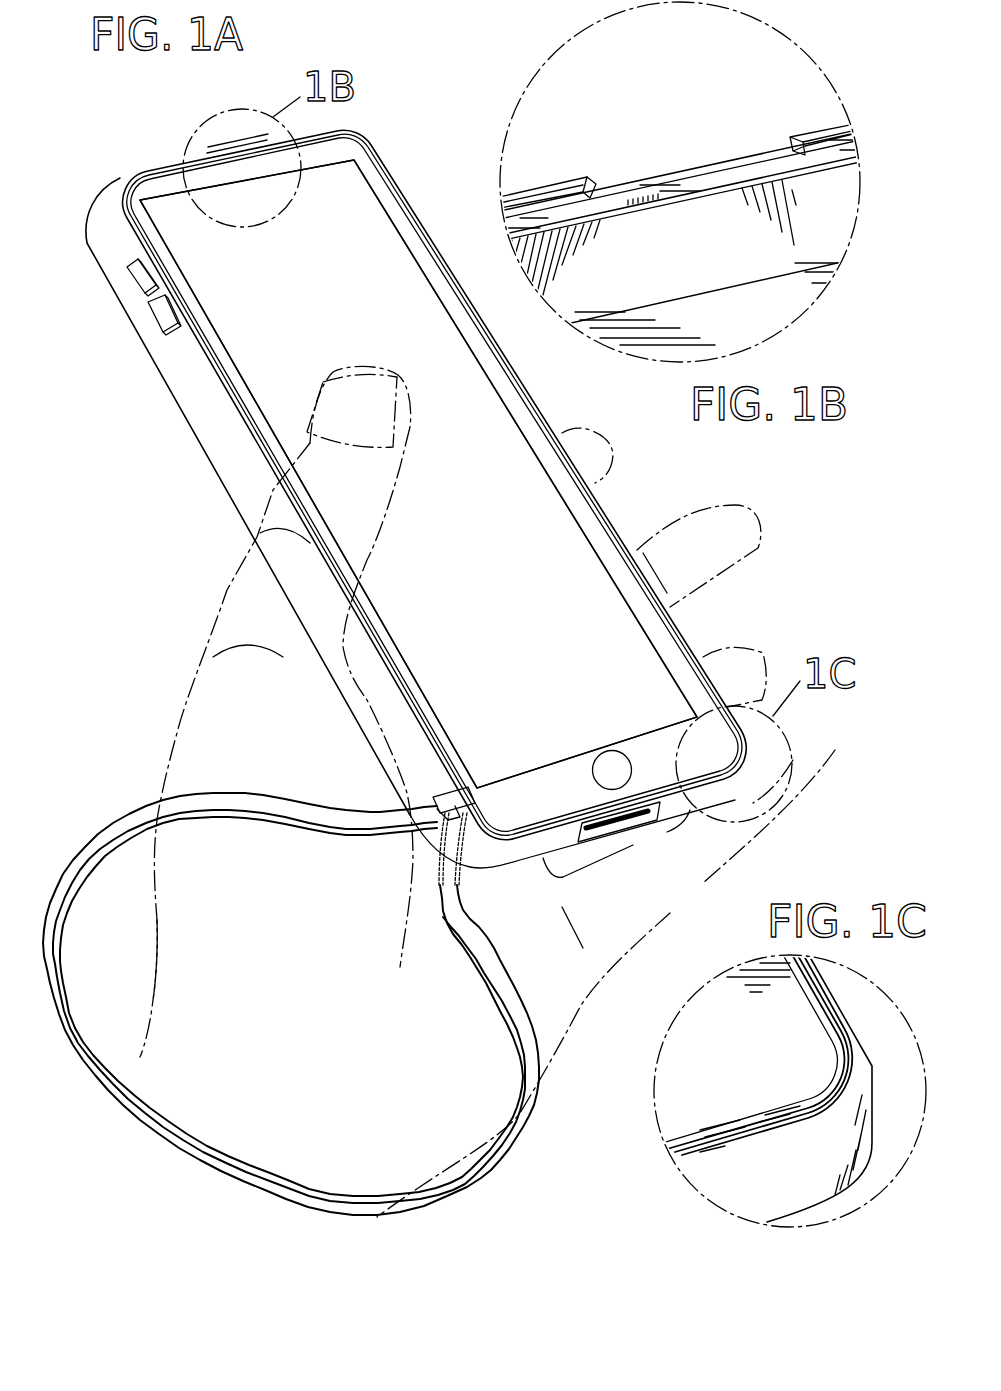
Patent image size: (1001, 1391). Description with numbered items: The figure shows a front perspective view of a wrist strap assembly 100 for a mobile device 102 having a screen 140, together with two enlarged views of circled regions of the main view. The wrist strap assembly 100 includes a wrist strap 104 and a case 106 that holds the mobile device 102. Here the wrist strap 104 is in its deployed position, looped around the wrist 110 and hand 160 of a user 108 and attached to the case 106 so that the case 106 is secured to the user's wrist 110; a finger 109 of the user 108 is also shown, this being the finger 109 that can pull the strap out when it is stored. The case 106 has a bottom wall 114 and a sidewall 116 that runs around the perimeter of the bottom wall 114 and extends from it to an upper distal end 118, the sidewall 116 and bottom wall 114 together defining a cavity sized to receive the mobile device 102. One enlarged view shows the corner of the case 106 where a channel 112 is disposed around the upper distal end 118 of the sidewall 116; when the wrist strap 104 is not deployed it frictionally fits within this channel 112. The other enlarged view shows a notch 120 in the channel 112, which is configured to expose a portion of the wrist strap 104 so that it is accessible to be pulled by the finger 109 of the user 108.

In FIG. 1A, the wrist strap assembly 100 is at (118, 362).
In FIG. 1A, the mobile device 102 is at (590, 532).
In FIG. 1A, the wrist strap 104 is at (92, 827).
In FIG. 1A, the case 106 is at (178, 407).
In FIG. 1A, the user 108 is at (168, 733).
In FIG. 1A, the finger 109 is at (760, 514).
In FIG. 1A, the wrist 110 is at (143, 1037).
In FIG. 1A, the channel 112 is at (120, 197).
In FIG. 1C, the channel 112 is at (868, 1043).
In FIG. 1A, the bottom wall 114 is at (112, 300).
In FIG. 1A, the sidewall 116 is at (240, 452).
In FIG. 1A, the upper distal end 118 is at (124, 176).
In FIG. 1C, the upper distal end 118 is at (818, 1015).
In FIG. 1A, the notch 120 is at (265, 131).
In FIG. 1B, the notch 120 is at (780, 128).
In FIG. 1A, the screen 140 is at (330, 197).
In FIG. 1A, the hand 160 is at (423, 955).